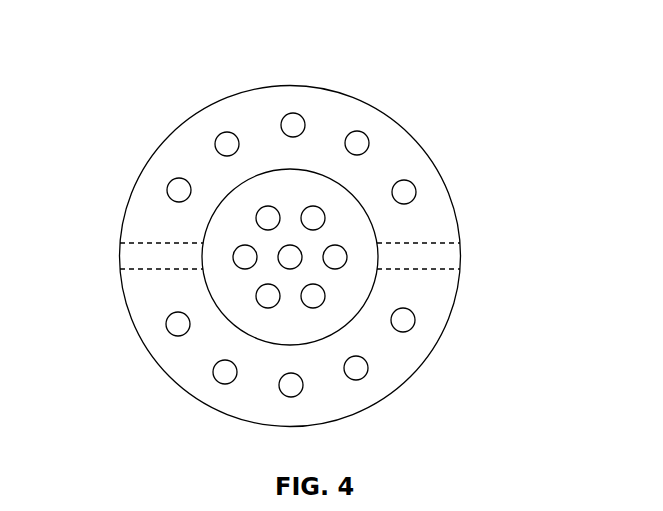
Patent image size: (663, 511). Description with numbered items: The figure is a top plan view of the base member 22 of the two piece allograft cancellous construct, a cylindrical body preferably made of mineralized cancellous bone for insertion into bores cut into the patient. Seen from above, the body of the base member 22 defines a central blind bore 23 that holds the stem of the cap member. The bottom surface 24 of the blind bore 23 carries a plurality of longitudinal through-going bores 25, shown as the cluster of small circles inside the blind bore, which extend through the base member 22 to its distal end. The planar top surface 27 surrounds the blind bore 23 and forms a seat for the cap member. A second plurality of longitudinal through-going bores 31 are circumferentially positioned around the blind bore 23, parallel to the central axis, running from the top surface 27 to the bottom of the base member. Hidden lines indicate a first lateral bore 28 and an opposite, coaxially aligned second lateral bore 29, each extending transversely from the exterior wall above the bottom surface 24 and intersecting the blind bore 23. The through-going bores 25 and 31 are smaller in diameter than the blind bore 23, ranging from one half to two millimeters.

The base member 22 is at (173, 383).
The blind bore 23 is at (217, 257).
The bottom surface of the blind bore 24 is at (367, 238).
The longitudinal through-going bores 25 is at (313, 206).
The top surface 27 is at (398, 362).
The first lateral bore 28 is at (117, 258).
The second lateral bore 29 is at (468, 255).
The second plurality of longitudinal through-going bores 31 is at (358, 131).